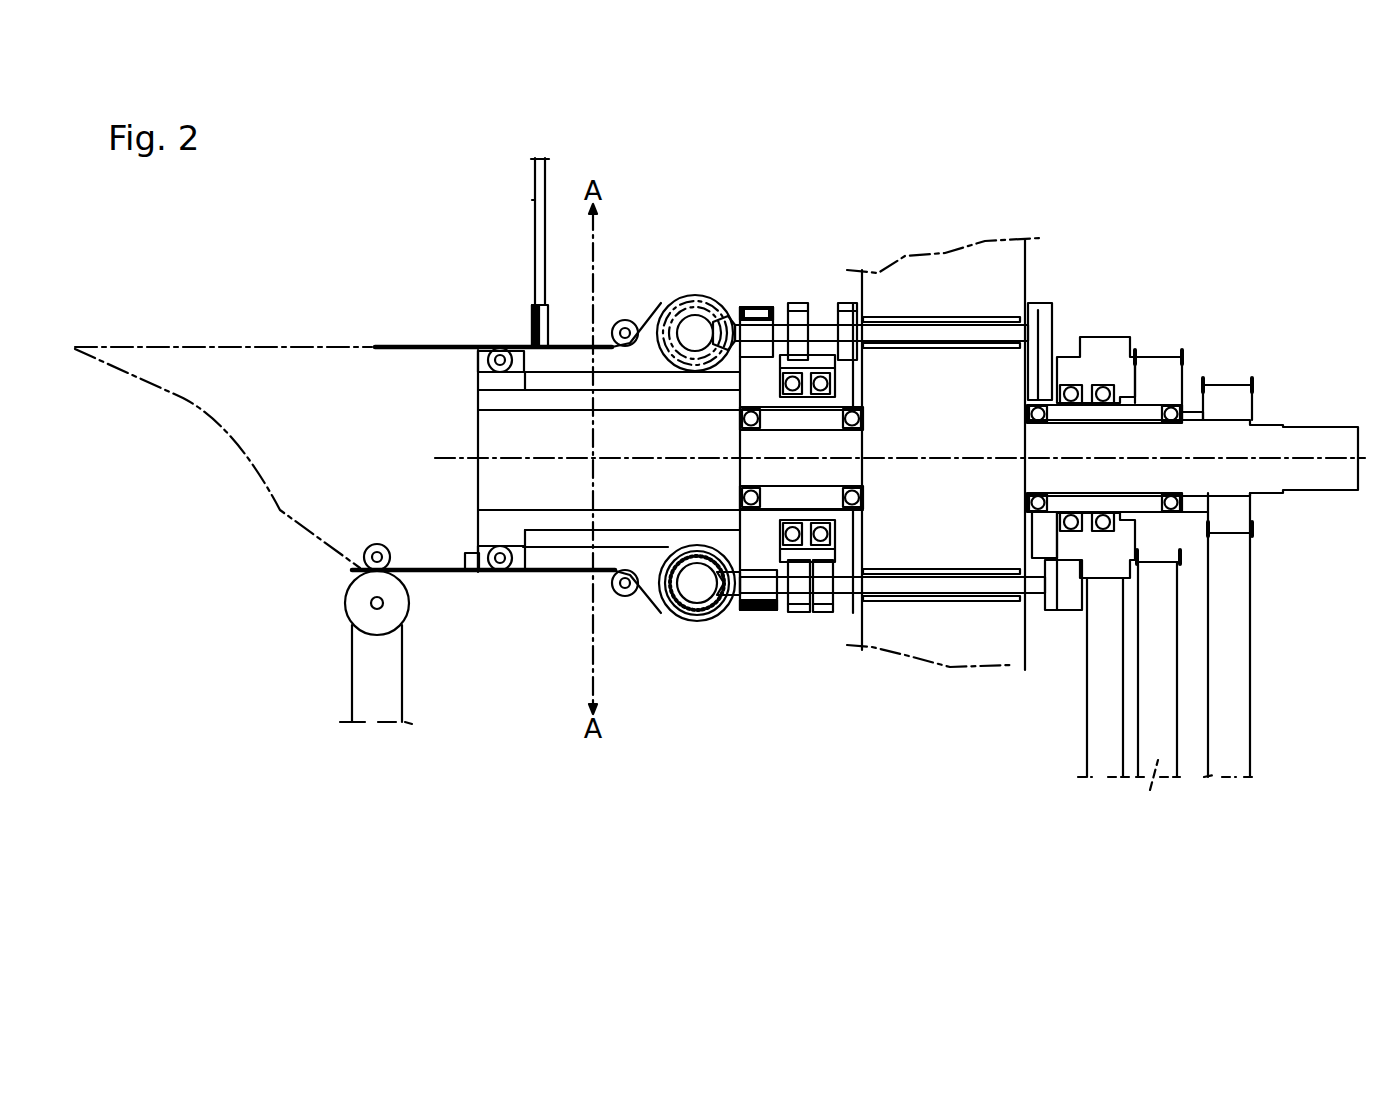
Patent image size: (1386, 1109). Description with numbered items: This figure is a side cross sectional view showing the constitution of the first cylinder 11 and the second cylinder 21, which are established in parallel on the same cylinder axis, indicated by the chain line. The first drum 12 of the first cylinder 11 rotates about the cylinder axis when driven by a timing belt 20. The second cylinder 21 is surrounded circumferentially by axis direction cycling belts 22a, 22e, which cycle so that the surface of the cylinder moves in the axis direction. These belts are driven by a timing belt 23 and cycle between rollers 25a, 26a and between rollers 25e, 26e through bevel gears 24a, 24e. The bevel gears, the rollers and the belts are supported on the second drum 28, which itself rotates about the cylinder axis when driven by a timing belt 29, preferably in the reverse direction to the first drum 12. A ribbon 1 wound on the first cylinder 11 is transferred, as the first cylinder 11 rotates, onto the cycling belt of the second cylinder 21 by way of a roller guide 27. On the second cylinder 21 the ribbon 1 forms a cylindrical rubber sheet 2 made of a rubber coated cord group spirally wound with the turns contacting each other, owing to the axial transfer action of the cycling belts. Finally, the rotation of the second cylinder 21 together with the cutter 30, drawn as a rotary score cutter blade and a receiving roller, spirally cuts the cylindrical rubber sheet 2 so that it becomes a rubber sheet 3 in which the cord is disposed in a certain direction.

The ribbon 1 is at (533, 200).
The cylindrical rubber sheet 2 is at (403, 347).
The rubber sheet 3 is at (163, 347).
The first cylinder 11 is at (1018, 272).
The first drum 12 is at (1300, 425).
The timing belt 20 is at (1250, 718).
The second cylinder 21 is at (490, 486).
The axis direction cycling belt 22a is at (637, 328).
The axis direction cycling belt 22e is at (644, 602).
The timing belt 23 is at (1087, 703).
The bevel gear 24a is at (713, 320).
The bevel gear 24e is at (700, 606).
The roller 25a is at (727, 322).
The roller 25e is at (722, 612).
The roller 26a is at (483, 360).
The roller 26e is at (474, 577).
The roller guide 27 is at (526, 322).
The second drum 28 is at (478, 390).
The timing belt 29 is at (1155, 765).
The cutter 30 is at (345, 602).